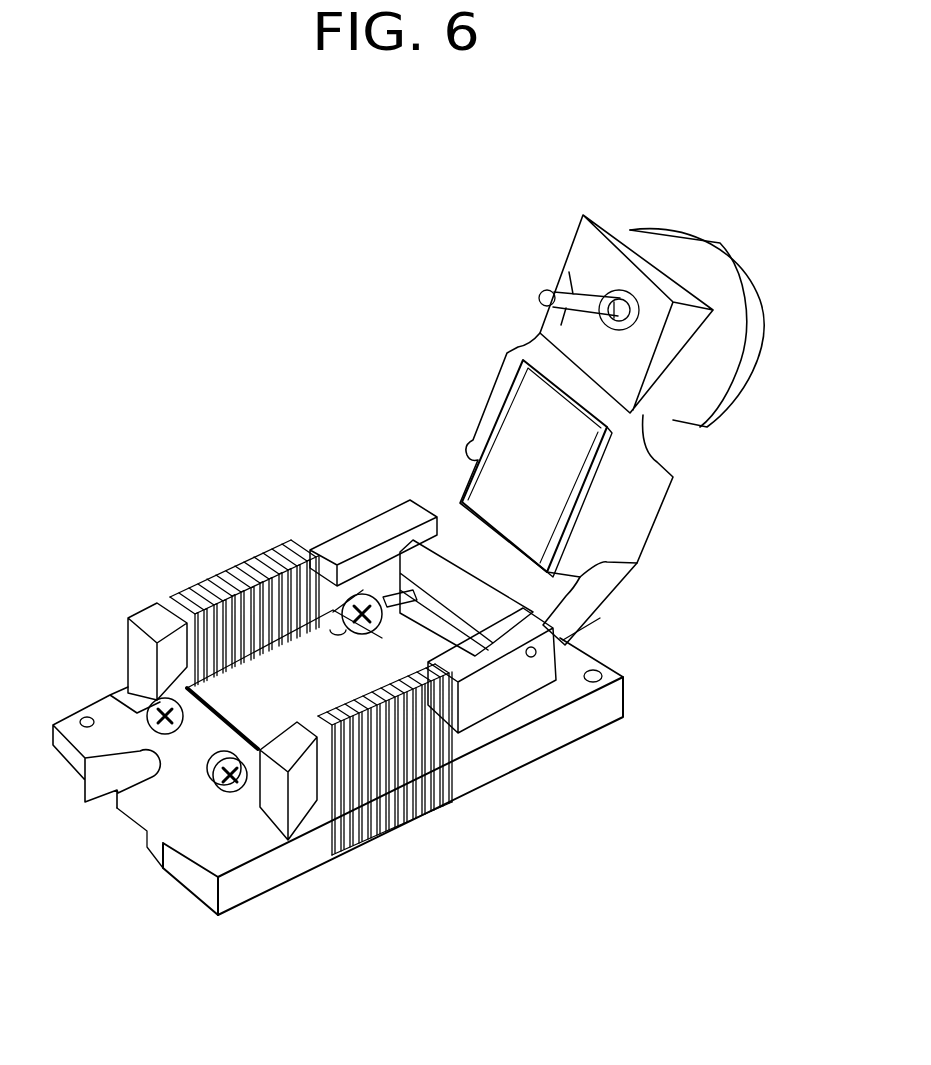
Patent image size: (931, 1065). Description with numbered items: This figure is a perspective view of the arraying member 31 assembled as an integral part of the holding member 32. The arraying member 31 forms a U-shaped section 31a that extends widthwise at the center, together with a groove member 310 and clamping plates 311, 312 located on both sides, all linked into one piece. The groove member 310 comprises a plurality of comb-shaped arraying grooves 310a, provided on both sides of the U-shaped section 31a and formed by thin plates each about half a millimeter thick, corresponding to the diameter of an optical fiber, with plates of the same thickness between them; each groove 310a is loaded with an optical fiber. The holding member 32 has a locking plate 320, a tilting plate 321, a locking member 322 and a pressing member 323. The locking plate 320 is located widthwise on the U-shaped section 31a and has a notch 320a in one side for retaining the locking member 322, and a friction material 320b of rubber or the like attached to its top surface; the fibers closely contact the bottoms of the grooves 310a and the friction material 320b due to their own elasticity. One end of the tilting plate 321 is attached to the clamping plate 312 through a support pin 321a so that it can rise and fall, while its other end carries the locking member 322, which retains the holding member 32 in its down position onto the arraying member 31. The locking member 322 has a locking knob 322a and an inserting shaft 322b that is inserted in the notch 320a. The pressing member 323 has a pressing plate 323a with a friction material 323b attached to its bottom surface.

The arraying member 31 is at (617, 883).
The U-shaped section 31a is at (345, 573).
The holding member 32 is at (437, 227).
The groove member 310 is at (374, 834).
The arraying grooves 310a is at (224, 580).
The clamping plate 311 is at (292, 882).
The clamping plate 312 is at (503, 788).
The locking plate 320 is at (377, 588).
The notch 320a is at (130, 762).
The friction material 320b is at (338, 630).
The tilting plate 321 is at (518, 345).
The support pin 321a is at (526, 656).
The locking member 322 is at (536, 296).
The locking knob 322a is at (691, 400).
The inserting shaft 322b is at (600, 300).
The pressing member 323 is at (483, 427).
The pressing plate 323a is at (586, 466).
The friction material 323b is at (531, 523).